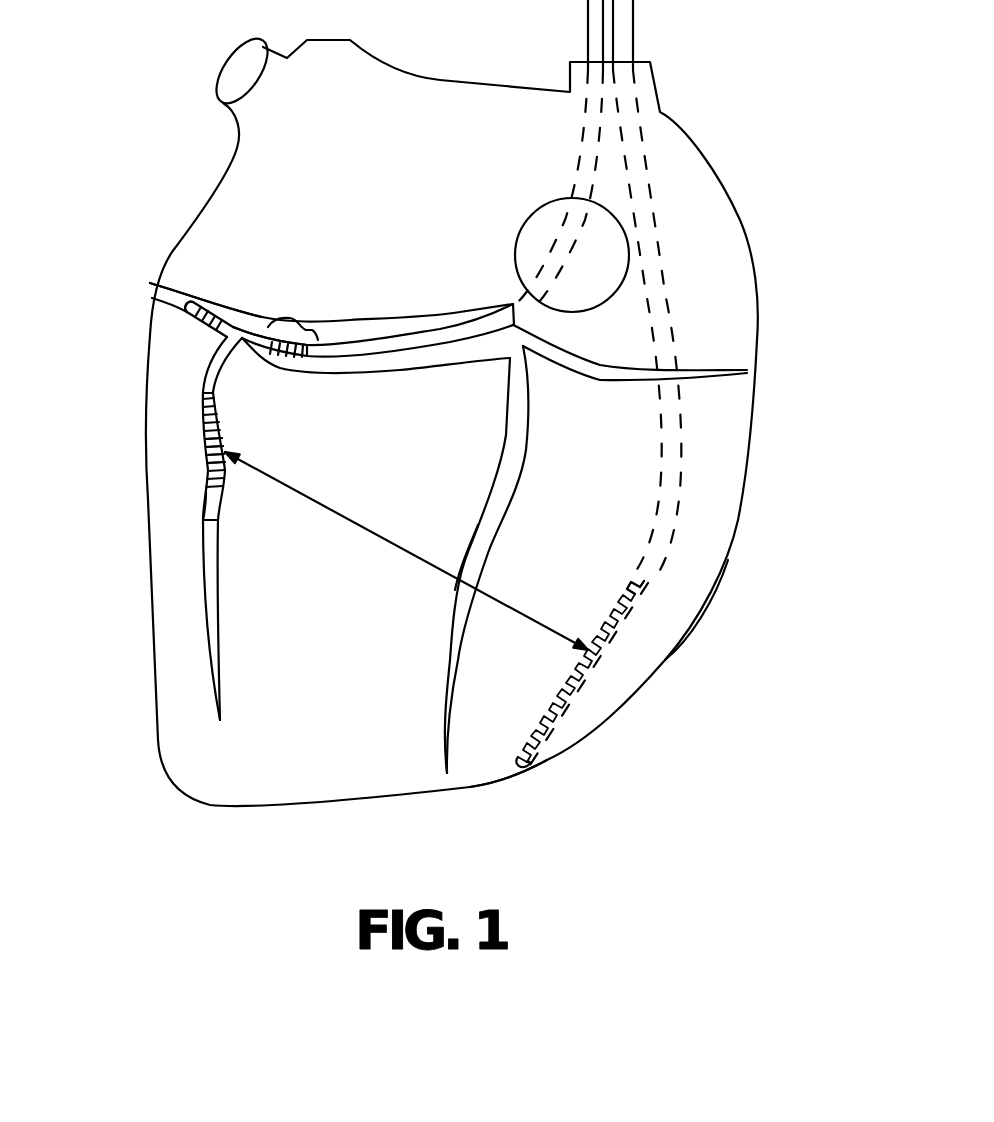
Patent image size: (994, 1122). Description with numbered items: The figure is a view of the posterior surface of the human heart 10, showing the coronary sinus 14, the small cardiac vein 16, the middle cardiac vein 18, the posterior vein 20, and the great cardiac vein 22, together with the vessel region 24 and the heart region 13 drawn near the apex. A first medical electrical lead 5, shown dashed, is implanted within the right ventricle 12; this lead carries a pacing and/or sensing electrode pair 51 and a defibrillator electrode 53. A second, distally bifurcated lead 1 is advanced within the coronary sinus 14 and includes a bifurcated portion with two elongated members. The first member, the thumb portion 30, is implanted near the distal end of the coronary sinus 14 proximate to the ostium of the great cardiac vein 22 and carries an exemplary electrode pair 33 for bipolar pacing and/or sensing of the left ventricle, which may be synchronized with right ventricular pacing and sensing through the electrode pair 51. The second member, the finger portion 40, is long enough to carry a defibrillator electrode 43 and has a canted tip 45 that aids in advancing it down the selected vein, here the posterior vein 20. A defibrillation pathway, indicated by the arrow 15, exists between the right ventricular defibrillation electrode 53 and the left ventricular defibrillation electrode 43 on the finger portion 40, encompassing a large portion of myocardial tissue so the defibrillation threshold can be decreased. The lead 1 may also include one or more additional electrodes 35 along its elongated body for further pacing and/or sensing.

The distally bifurcated lead 1 is at (253, 310).
The first medical electrical lead 5 is at (680, 551).
The heart 10 is at (175, 652).
The right ventricle 12 is at (686, 672).
The apex of heart 13 is at (493, 760).
The coronary sinus 14 is at (357, 330).
The arrow 15 is at (377, 540).
The small cardiac vein 16 is at (720, 368).
The middle cardiac vein 18 is at (518, 440).
The posterior vein 20 is at (207, 577).
The great cardiac vein 22 is at (167, 293).
The ostium 24 is at (162, 308).
The thumb portion 30 is at (196, 330).
The electrode pair 33 is at (222, 310).
The additional electrodes 35 is at (294, 313).
The finger portion 40 is at (186, 381).
The defibrillator electrode 43 is at (207, 460).
The canted tip 45 is at (207, 525).
The electrode pair 51 is at (558, 740).
The defibrillator electrode 53 is at (620, 627).